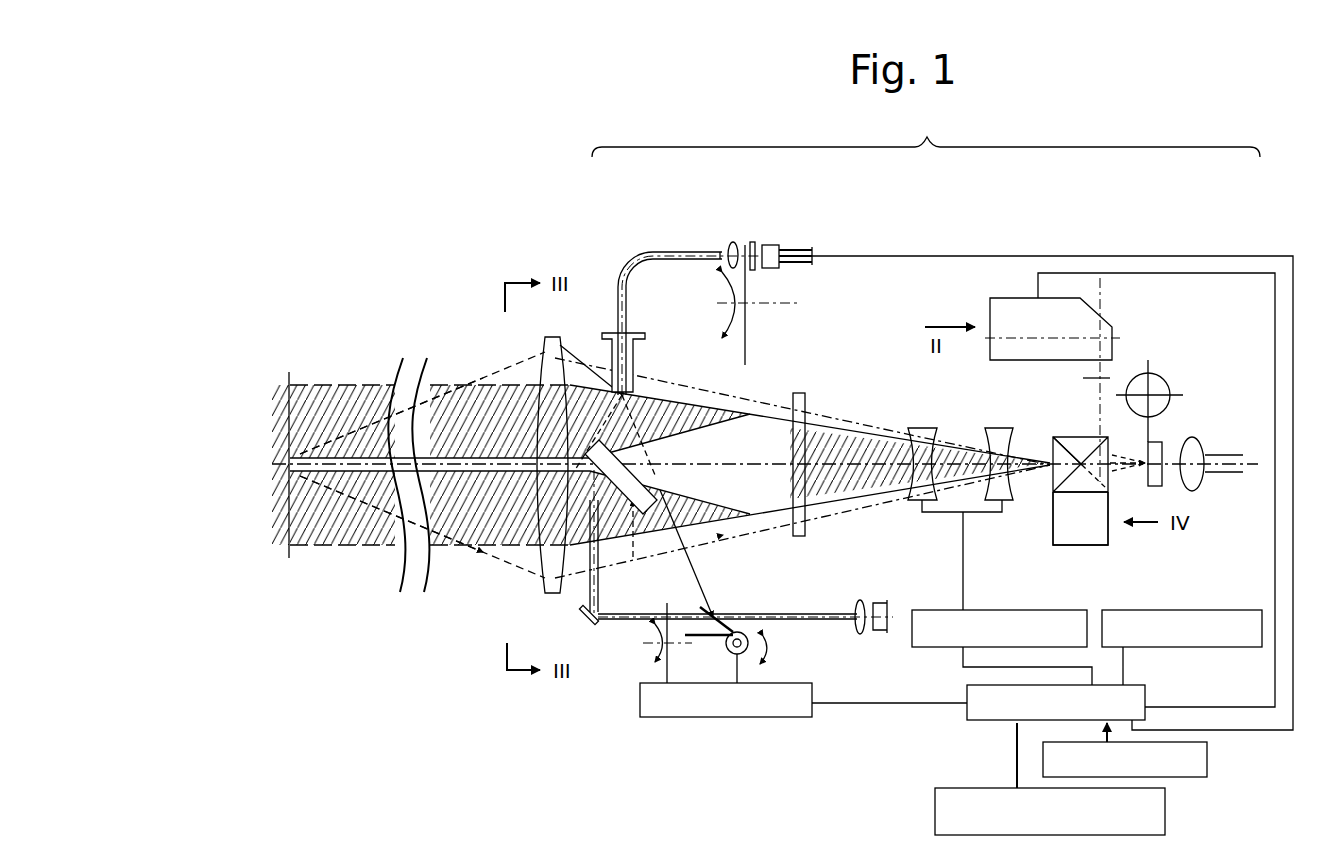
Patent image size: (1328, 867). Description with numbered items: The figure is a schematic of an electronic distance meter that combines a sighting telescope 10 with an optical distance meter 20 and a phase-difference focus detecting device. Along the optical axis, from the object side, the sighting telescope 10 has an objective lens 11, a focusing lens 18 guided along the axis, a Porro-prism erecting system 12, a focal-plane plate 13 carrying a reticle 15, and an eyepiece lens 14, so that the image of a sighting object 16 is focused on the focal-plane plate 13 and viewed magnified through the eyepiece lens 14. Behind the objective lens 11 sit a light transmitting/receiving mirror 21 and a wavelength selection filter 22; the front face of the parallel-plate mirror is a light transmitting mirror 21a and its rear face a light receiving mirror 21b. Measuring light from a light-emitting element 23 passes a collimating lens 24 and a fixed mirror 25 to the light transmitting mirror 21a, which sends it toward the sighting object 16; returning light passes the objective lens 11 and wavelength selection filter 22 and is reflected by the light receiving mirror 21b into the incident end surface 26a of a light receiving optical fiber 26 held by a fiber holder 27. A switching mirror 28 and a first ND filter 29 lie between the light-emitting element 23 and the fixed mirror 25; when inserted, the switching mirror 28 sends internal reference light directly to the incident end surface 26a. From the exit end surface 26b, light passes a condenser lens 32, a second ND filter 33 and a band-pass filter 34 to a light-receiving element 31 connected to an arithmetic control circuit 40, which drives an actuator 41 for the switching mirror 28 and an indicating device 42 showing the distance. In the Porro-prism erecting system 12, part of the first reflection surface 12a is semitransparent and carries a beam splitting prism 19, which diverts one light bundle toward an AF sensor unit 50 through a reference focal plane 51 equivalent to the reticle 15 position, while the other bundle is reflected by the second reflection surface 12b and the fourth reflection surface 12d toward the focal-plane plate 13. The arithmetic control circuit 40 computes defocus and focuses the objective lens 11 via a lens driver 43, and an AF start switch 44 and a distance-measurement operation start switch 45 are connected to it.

The sighting telescope 10 is at (926, 133).
The objective lens 11 is at (556, 340).
The Porro-prism erecting system 12 is at (1073, 465).
The first reflection surface 12a is at (1053, 442).
The second reflection surface 12b is at (1085, 545).
The fourth reflection surface 12d is at (1053, 492).
The focal-plane plate 13 is at (1157, 384).
The eyepiece lens 14 is at (1192, 442).
The reticle 15 is at (1148, 418).
The sighting object 16 is at (303, 418).
The focusing lens 18 is at (923, 430).
The beam splitting prism 19 is at (1078, 453).
The optical distance meter 20 is at (620, 258).
The light transmitting/receiving mirror 21 is at (612, 505).
The light transmitting mirror 21a is at (600, 555).
The light receiving mirror 21b is at (657, 474).
The wavelength selection filter 22 is at (798, 405).
The light-emitting element 23 is at (880, 632).
The collimating lens 24 is at (862, 600).
The fixed mirror 25 is at (583, 616).
The light receiving optical fiber 26 is at (656, 250).
The incident end surface 26a is at (625, 396).
The exit end surface 26b is at (730, 248).
The fiber holder 27 is at (645, 338).
The switching mirror 28 is at (727, 617).
The first ND filter 29 is at (668, 663).
The light-receiving element 31 is at (773, 267).
The condenser lens 32 is at (735, 244).
The second ND filter 33 is at (748, 345).
The band-pass filter 34 is at (753, 243).
The arithmetic control circuit 40 is at (967, 692).
The actuator 41 is at (780, 718).
The indicating device 42 is at (1196, 610).
The lens driver 43 is at (1010, 610).
The AF start switch 44 is at (1207, 760).
The distance-measurement operation start switch 45 is at (968, 788).
The AF sensor unit 50 is at (1022, 296).
The reference focal plane 51 is at (1083, 378).